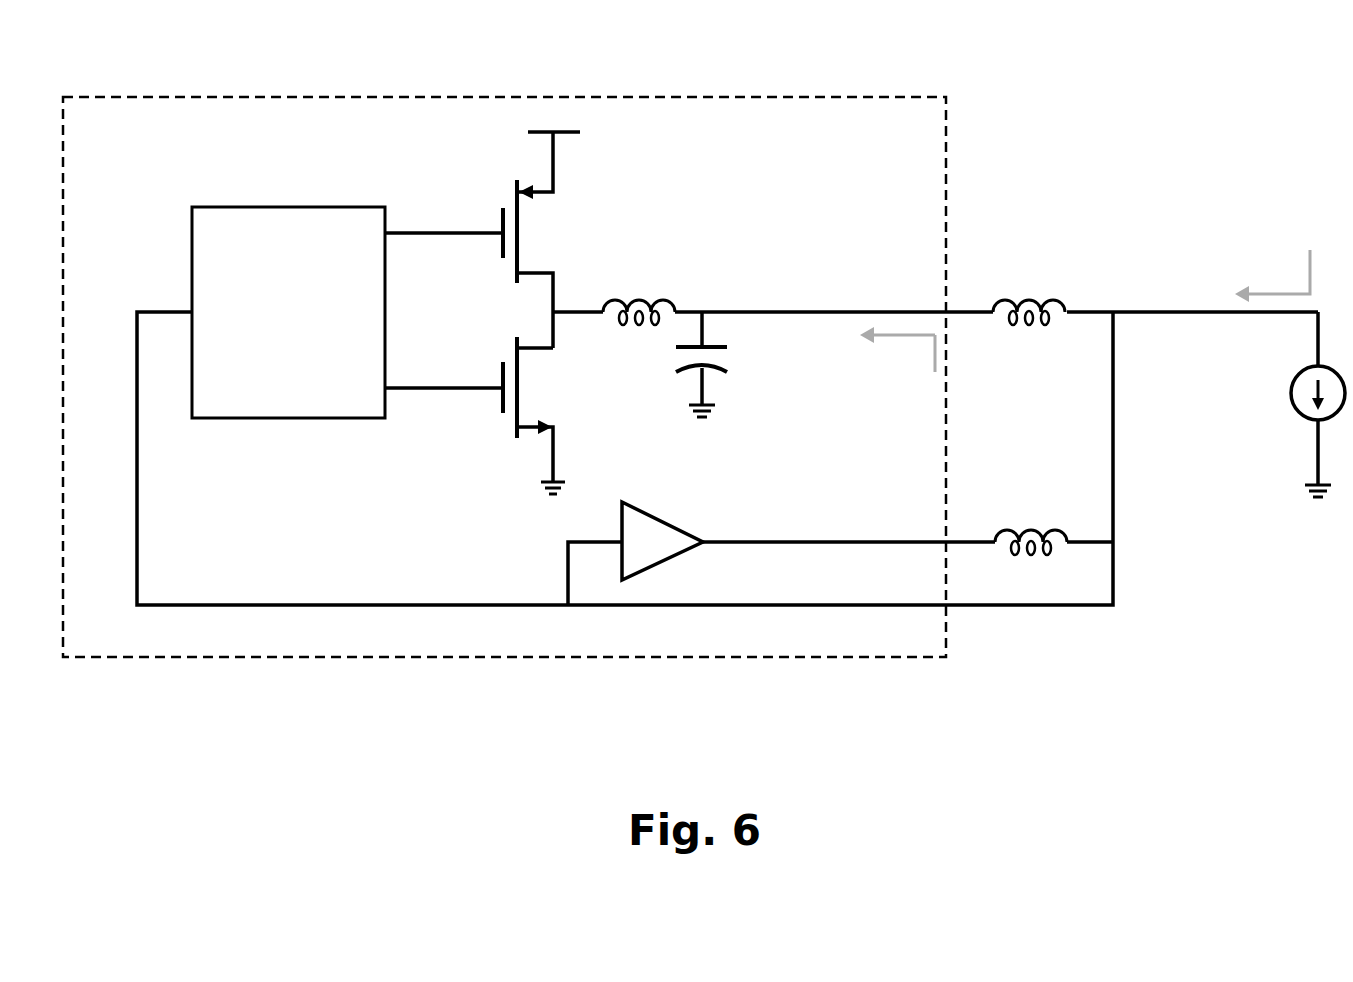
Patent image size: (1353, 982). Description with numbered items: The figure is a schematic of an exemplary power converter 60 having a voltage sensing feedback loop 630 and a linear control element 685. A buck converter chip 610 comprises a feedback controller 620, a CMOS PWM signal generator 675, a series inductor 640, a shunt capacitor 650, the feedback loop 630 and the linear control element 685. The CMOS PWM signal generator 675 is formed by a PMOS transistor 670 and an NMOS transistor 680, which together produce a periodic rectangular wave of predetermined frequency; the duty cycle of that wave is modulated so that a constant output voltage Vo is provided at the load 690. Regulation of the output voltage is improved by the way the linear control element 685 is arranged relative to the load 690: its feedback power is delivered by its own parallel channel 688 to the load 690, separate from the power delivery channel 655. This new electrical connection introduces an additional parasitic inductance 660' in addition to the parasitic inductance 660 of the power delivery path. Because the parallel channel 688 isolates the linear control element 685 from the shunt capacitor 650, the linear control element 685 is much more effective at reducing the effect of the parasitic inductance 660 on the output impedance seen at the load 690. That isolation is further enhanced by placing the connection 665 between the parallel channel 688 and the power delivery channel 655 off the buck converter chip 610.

The power converter 60 is at (159, 44).
The buck converter chip 610 is at (302, 82).
The feedback controller 620 is at (288, 312).
The feedback loop 630 is at (1073, 625).
The series inductor 640 is at (640, 272).
The shunt capacitor 650 is at (760, 366).
The power delivery channel 655 is at (771, 288).
The parasitic inductance 660 is at (1029, 253).
The additional parasitic inductance 660' is at (1054, 486).
The connection 665 is at (1114, 290).
The PMOS transistor 670 is at (488, 247).
The CMOS PWM signal generator 675 is at (549, 305).
The NMOS transistor 680 is at (488, 409).
The linear control element 685 is at (703, 562).
The parallel channel 688 is at (837, 530).
The load 690 is at (1275, 418).